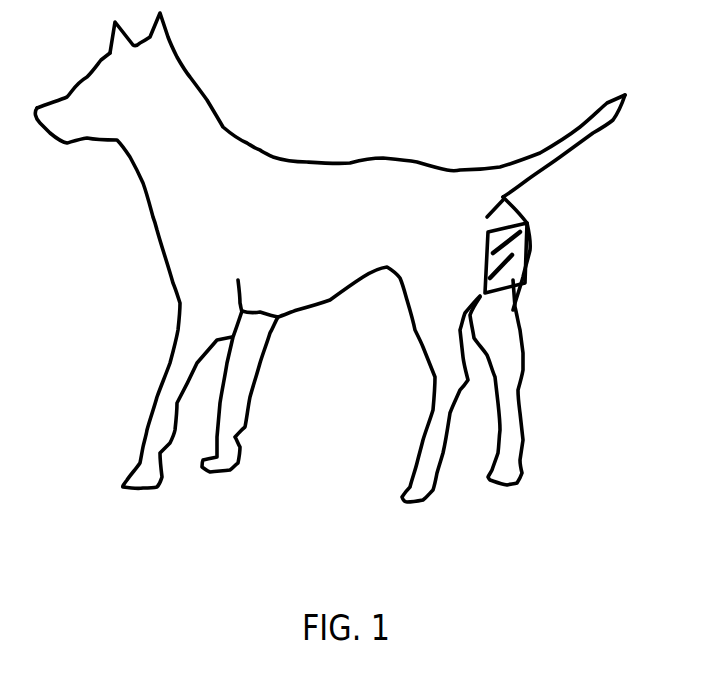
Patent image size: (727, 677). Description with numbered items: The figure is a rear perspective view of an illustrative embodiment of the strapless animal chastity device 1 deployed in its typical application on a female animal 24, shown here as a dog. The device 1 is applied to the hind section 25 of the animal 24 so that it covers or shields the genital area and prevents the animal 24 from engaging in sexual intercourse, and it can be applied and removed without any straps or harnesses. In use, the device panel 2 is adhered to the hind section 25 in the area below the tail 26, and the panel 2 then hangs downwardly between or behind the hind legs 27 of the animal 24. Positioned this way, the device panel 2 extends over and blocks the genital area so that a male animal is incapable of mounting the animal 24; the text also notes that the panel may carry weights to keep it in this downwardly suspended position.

The strapless animal chastity device 1 is at (460, 245).
The device panel 2 is at (531, 262).
The female animal 24 is at (327, 161).
The hind section 25 is at (507, 202).
The tail 26 is at (594, 129).
The hind legs 27 is at (423, 490).